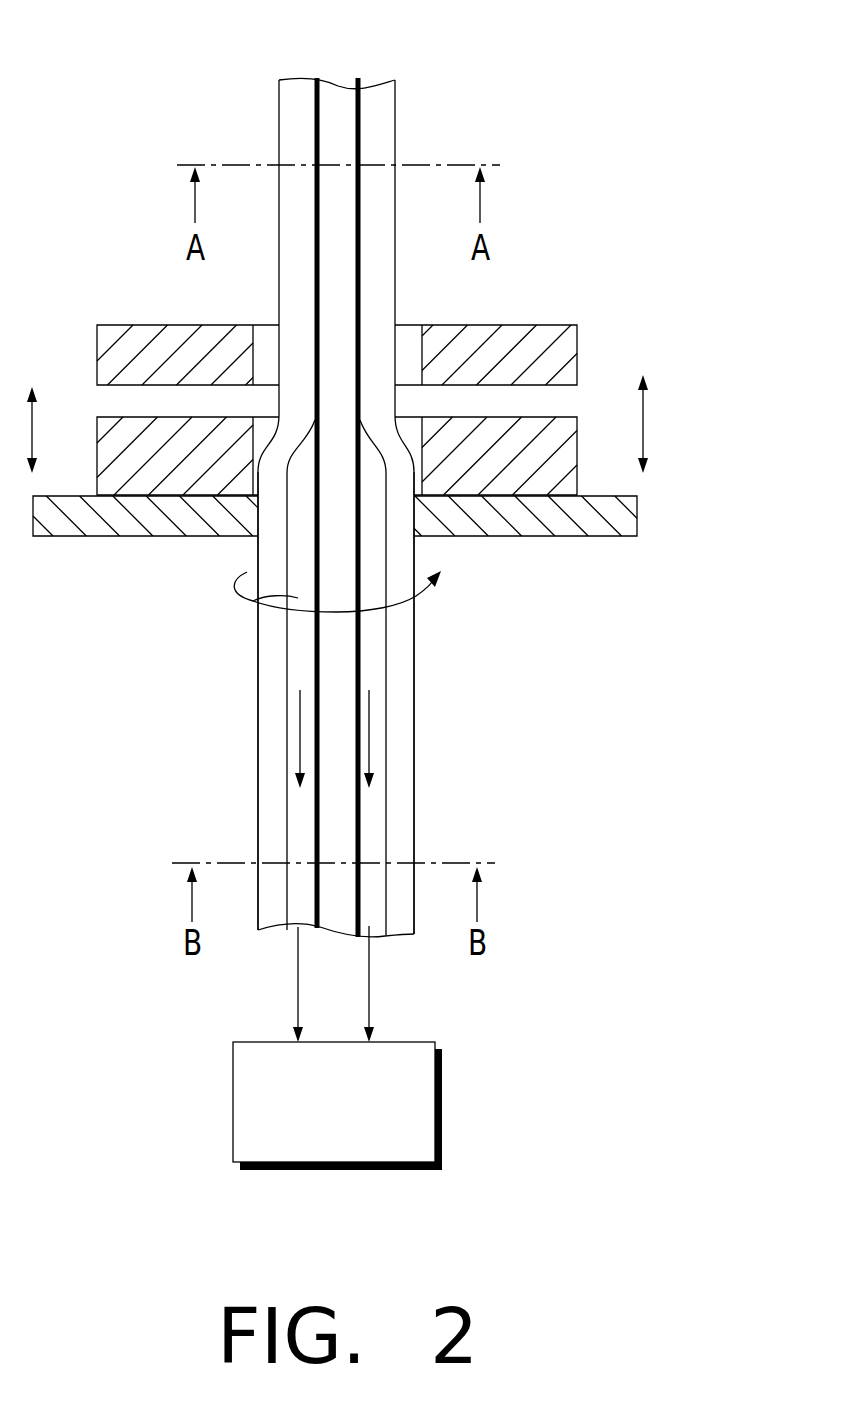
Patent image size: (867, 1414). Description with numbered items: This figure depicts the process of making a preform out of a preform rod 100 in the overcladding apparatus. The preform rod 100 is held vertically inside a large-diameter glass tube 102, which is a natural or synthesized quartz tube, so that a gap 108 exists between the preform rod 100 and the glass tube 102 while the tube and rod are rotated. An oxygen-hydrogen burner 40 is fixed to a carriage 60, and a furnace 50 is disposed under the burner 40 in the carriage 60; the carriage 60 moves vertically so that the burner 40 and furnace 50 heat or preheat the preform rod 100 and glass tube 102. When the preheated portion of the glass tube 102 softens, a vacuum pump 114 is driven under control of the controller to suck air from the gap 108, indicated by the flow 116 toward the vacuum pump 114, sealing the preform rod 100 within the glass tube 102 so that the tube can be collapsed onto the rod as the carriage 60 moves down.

The preform rod 100 is at (338, 88).
The glass tube 102 is at (410, 740).
The oxygen-hydrogen burner 40 is at (570, 353).
The furnace 50 is at (570, 455).
The carriage 60 is at (637, 515).
The gap 108 is at (253, 601).
The suction flow path 116 is at (300, 734).
The vacuum pump 114 is at (442, 1098).